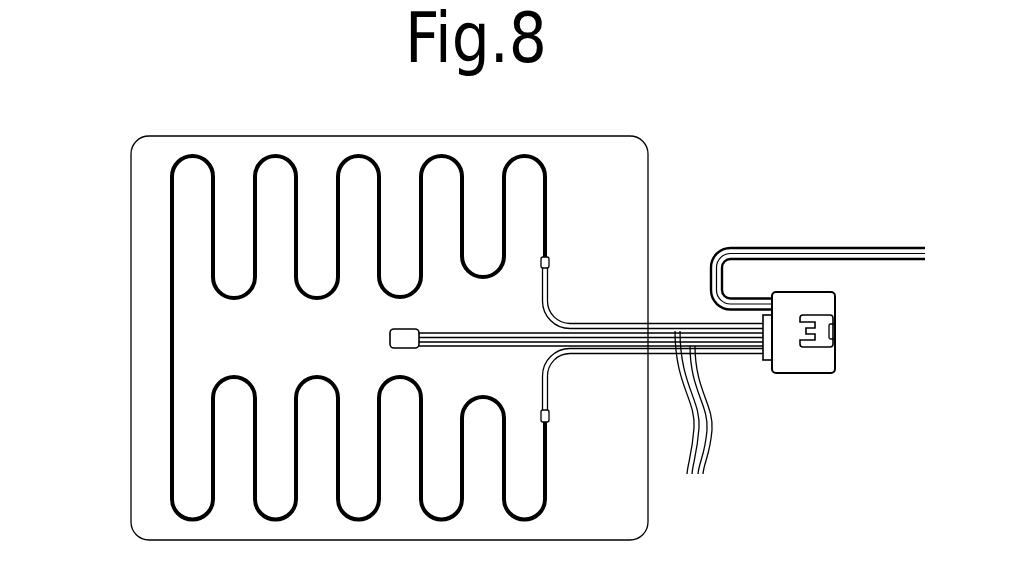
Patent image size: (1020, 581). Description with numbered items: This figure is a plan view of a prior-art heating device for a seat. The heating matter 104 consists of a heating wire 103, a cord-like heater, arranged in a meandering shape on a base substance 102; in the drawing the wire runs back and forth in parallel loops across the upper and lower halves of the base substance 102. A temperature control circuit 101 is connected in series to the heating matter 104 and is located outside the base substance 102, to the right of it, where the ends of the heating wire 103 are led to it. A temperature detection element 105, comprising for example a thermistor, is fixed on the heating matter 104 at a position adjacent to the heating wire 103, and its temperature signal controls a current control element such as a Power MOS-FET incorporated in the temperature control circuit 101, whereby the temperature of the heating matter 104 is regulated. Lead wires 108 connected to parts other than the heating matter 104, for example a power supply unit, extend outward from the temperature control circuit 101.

The temperature control circuit 101 is at (787, 374).
The base substance 102 is at (627, 203).
The heating wire 103 is at (543, 167).
The heating matter 104 is at (517, 335).
The temperature detection element 105 is at (390, 337).
The lead wires 108 is at (870, 258).